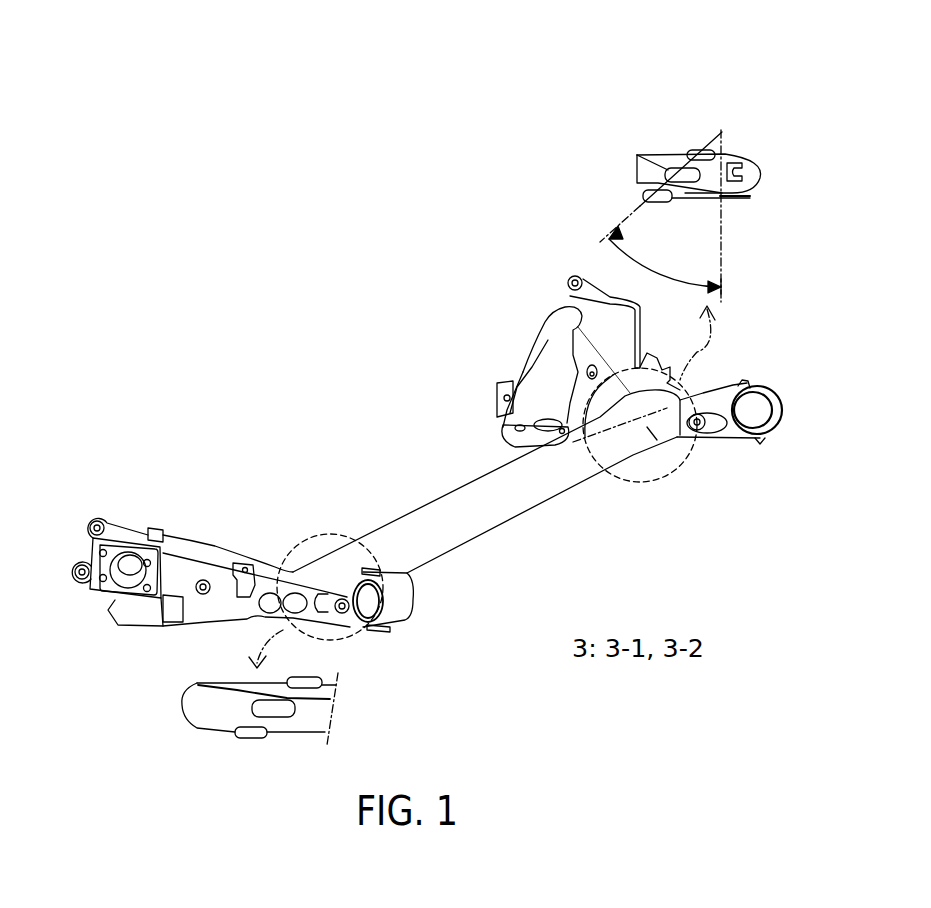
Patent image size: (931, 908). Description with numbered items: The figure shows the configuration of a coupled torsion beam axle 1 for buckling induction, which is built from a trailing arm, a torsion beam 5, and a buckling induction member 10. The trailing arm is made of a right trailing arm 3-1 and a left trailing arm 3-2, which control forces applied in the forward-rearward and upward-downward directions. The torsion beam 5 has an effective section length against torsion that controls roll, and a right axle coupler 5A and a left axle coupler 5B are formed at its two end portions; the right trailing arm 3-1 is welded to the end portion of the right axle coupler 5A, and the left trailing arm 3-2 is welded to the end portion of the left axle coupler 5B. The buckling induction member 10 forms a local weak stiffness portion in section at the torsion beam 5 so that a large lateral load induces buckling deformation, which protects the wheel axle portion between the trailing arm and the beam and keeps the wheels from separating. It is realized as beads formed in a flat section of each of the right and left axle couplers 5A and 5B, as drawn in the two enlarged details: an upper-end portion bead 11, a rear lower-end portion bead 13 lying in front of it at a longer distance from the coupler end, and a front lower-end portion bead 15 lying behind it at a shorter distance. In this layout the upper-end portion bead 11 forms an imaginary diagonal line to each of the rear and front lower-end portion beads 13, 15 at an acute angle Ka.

The coupled torsion beam axle 1 is at (392, 291).
The right trailing arm 3-1 is at (565, 342).
The left trailing arm 3-2 is at (178, 573).
The torsion beam 5 is at (462, 484).
The right axle coupler 5A is at (652, 450).
The left axle coupler 5B is at (347, 557).
The buckling induction member 10 is at (667, 78).
The upper-end portion bead 11 is at (637, 157).
The rear lower-end portion bead 13 is at (640, 192).
The front lower-end portion bead 15 is at (693, 150).
The acute angle Ka is at (675, 252).